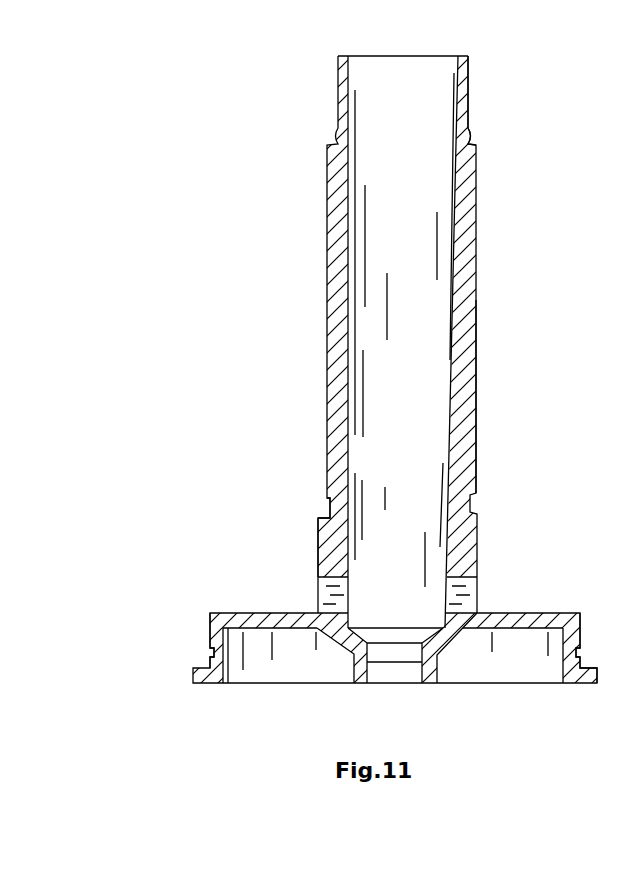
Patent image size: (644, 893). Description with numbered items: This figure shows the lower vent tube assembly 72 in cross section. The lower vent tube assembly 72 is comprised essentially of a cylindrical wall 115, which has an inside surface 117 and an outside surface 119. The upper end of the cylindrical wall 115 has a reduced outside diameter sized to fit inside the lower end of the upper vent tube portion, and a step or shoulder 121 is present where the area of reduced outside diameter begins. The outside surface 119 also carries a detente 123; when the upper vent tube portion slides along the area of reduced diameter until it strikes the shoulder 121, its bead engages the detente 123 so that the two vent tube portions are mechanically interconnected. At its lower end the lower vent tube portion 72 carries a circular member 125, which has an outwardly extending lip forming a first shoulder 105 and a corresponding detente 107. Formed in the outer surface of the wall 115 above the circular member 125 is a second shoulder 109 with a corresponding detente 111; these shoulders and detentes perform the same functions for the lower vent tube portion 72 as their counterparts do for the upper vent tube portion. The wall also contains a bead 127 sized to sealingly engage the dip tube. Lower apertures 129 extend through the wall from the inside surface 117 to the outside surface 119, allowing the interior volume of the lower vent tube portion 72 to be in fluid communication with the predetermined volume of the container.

The lower vent tube assembly 72 is at (222, 462).
The first shoulder 105 is at (197, 666).
The first detente 107 is at (213, 652).
The second shoulder 109 is at (322, 517).
The second detente 111 is at (320, 498).
The cylindrical wall 115 is at (472, 448).
The inside surface 117 is at (450, 440).
The outside surface 119 is at (473, 333).
The shoulder 121 is at (473, 145).
The detente 123 is at (468, 133).
The circular member 125 is at (522, 627).
The bead 127 is at (417, 670).
The lower apertures 129 is at (323, 593).